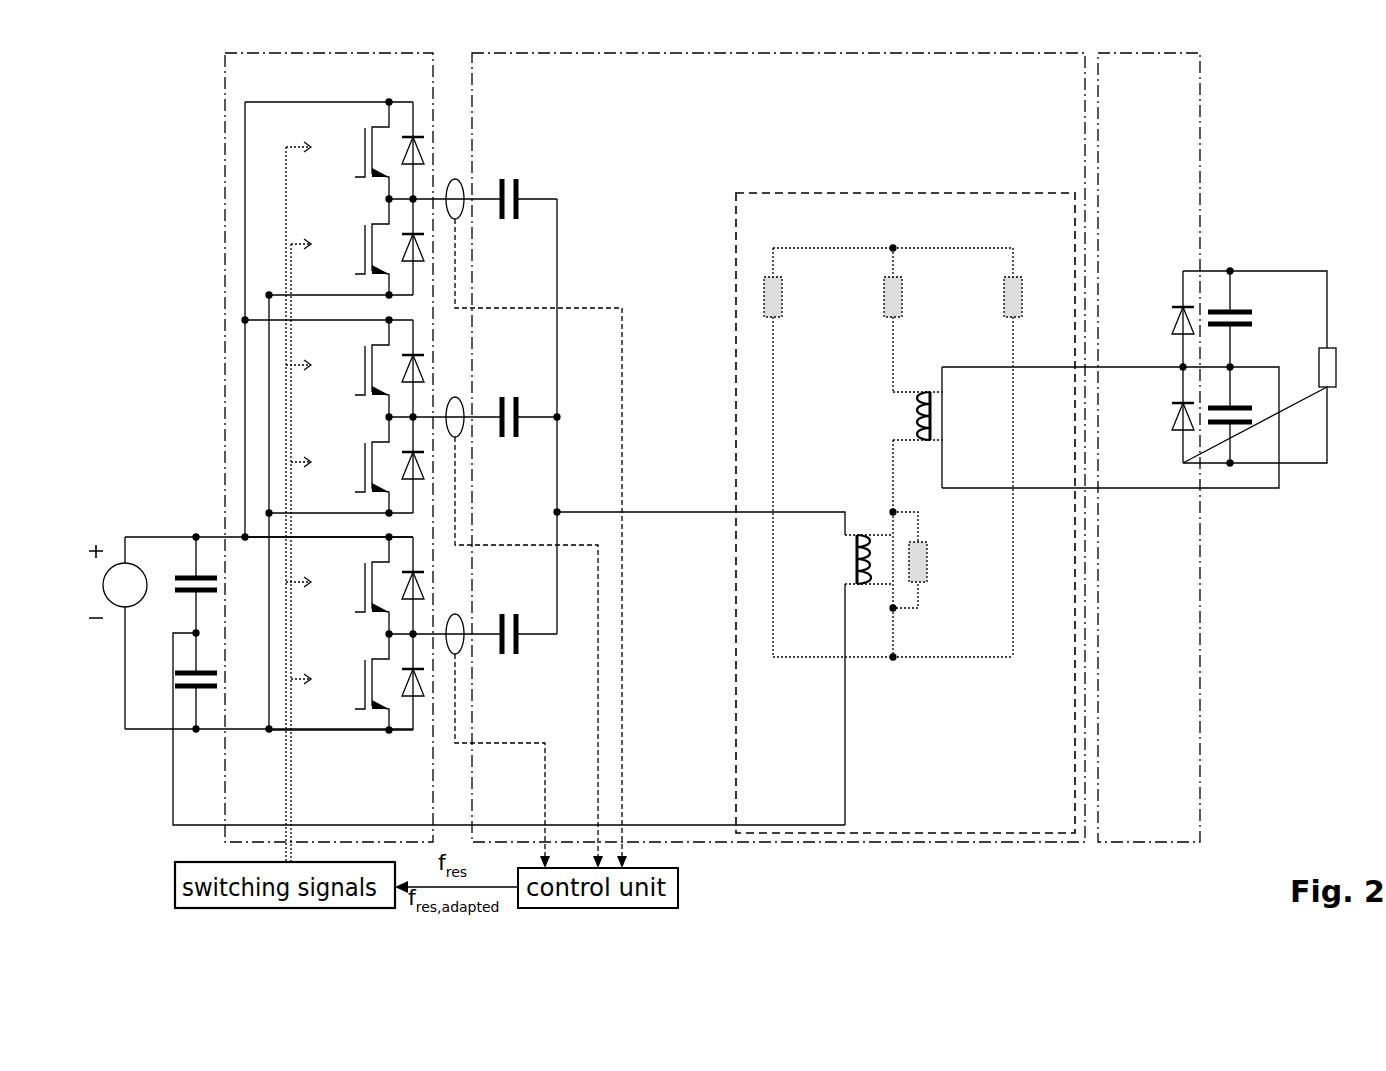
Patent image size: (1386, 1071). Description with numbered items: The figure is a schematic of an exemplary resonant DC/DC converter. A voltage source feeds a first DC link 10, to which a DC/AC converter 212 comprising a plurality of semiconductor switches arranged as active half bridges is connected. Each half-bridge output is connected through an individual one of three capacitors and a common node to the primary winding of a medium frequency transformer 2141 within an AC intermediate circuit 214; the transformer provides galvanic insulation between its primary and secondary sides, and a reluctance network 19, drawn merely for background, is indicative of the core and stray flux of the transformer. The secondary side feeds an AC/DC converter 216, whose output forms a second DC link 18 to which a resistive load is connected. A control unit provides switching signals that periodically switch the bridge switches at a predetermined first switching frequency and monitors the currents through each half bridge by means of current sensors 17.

The first DC link 10 is at (195, 552).
The current sensors 17 is at (458, 612).
The second DC link 18 is at (1233, 442).
The reluctance network 19 is at (948, 243).
The DC/AC converter 212 is at (289, 93).
The AC intermediate circuit 214 is at (554, 93).
The AC/DC converter 216 is at (1162, 93).
The medium frequency transformer 2141 is at (820, 242).